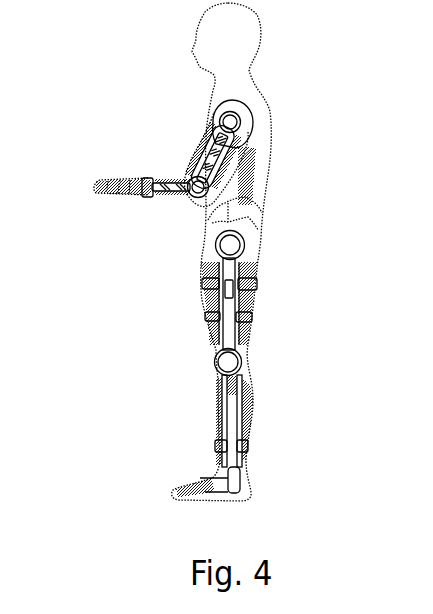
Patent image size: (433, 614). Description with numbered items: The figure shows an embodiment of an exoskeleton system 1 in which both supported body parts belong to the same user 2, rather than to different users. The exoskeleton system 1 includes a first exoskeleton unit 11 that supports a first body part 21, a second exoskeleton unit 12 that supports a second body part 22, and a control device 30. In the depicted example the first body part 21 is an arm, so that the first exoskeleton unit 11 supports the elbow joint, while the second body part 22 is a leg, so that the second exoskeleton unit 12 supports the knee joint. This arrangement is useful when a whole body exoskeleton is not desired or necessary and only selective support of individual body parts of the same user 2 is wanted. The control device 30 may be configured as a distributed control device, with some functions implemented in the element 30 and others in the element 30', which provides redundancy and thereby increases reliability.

The exoskeleton system 1 is at (131, 61).
The user 2 is at (248, 62).
The first exoskeleton unit 11 is at (196, 181).
The second exoskeleton unit 12 is at (249, 361).
The first body part 21 is at (192, 142).
The second body part 22 is at (251, 348).
The control device 30 is at (288, 299).
The control device element 30' is at (161, 222).